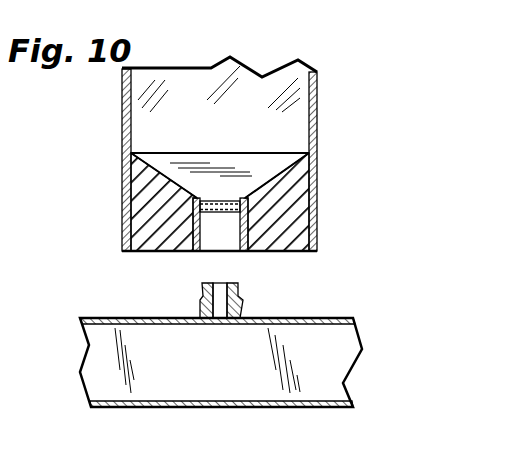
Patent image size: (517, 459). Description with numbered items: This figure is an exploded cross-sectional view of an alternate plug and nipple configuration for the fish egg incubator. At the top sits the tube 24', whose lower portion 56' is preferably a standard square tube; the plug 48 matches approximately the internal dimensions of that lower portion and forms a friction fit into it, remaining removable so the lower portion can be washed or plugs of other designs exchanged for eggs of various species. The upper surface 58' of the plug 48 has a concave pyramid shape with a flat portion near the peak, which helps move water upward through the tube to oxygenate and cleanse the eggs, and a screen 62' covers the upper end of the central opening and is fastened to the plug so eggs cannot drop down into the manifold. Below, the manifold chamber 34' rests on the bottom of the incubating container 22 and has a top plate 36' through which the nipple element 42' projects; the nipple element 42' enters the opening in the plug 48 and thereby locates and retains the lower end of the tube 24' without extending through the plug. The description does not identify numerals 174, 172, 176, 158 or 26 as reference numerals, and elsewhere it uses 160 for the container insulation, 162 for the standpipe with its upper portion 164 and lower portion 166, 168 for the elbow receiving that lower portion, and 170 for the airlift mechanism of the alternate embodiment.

The tube 24' is at (239, 133).
The lower portion of tube 56' is at (333, 161).
The upper surface of plug 58' is at (220, 175).
The plug 48 is at (229, 140).
The funnel surface 174 is at (203, 198).
The elbow 168 is at (222, 198).
The screen 62' is at (265, 167).
The airlift mechanism 170 is at (192, 207).
The lower portion of standpipe 166 is at (248, 207).
The cap passage 172 is at (220, 216).
The outlet opening 176 is at (210, 214).
The manifold chamber 34' is at (193, 345).
The top plate 36' is at (217, 345).
The nipple element 42' is at (221, 315).
The insulation 160 is at (202, 283).
The standpipe 162 is at (200, 293).
The upper portion of standpipe 164 is at (200, 308).
The fitting bore 158 is at (221, 323).
The incubating container 22 is at (4, 136).
The adjacent element 26 is at (10, 194).